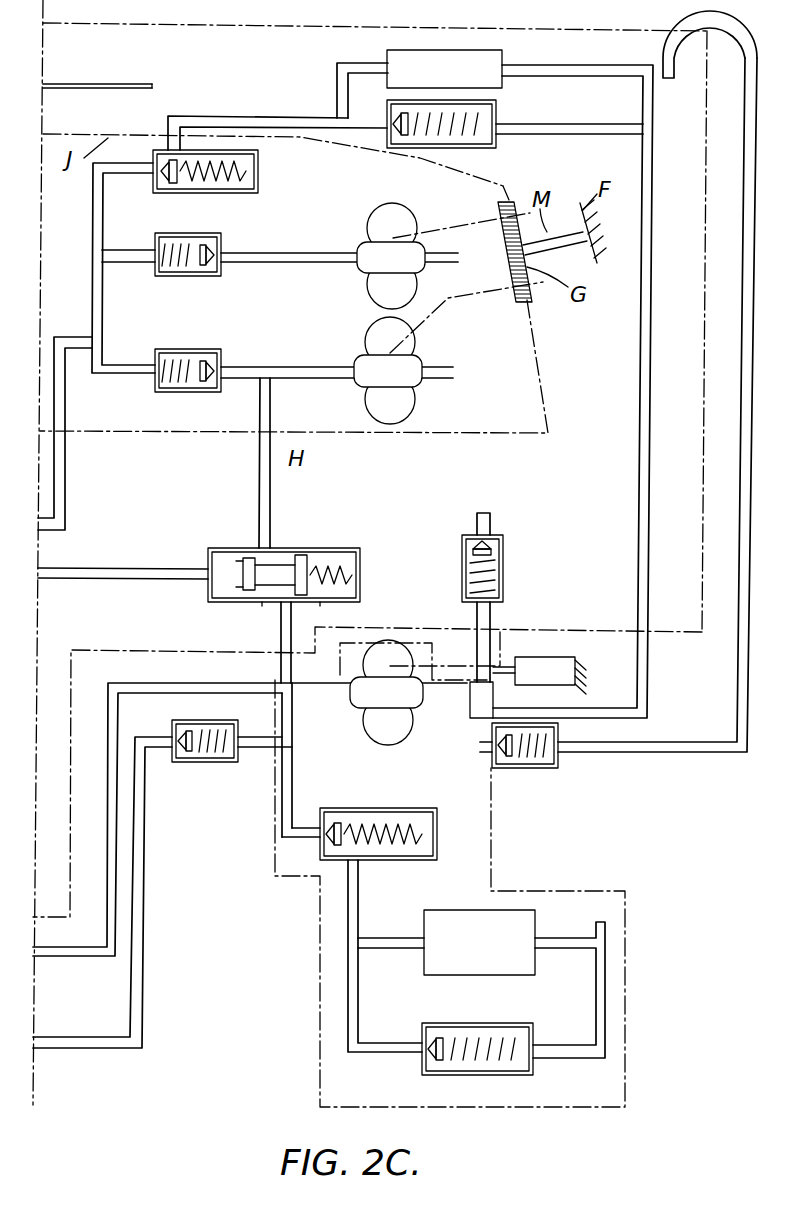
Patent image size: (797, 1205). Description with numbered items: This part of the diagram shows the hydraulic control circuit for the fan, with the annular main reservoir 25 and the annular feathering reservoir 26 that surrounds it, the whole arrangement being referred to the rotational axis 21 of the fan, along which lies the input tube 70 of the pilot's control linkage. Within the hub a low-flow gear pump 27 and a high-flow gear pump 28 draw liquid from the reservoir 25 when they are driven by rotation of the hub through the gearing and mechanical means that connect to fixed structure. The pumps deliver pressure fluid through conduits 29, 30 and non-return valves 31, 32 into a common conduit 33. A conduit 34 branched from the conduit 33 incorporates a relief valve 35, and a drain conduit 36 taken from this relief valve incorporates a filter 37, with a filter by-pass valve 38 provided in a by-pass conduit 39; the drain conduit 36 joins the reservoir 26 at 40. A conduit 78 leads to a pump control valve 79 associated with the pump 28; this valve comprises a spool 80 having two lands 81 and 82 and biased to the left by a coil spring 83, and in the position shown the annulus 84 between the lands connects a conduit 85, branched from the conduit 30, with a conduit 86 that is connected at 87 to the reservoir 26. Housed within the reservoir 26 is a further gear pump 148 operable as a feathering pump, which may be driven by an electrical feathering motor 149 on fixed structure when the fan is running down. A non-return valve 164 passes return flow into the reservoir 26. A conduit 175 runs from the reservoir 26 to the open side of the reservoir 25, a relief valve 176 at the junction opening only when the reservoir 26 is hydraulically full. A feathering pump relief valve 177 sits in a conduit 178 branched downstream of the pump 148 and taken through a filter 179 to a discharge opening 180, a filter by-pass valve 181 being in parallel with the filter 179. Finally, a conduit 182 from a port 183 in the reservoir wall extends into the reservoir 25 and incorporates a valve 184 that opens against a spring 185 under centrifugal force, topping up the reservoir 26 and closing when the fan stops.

The rotational axis 21 is at (150, 28).
The annular main reservoir 25 is at (643, 55).
The annular feathering reservoir 26 is at (322, 945).
The gear pump 27 is at (398, 221).
The gear pump 28 is at (363, 372).
The conduit 29 is at (292, 253).
The conduit 30 is at (243, 365).
The non-return valve 31 is at (212, 237).
The non-return valve 32 is at (187, 350).
The common conduit 33 is at (93, 298).
The conduit 34 is at (98, 220).
The relief valve 35 is at (258, 163).
The drain conduit 36 is at (241, 117).
The filter 37 is at (487, 66).
The filter by-pass valve 38 is at (496, 116).
The by-pass conduit 39 is at (568, 126).
The connection point 40 is at (493, 710).
The input tube 70 is at (60, 87).
The conduit 78 is at (92, 572).
The pump control valve 79 is at (305, 575).
The spool 80 is at (304, 577).
The land 81 is at (243, 560).
The land 82 is at (320, 602).
The coil spring 83 is at (352, 570).
The annulus 84 is at (265, 600).
The conduit 85 is at (271, 495).
The conduit 86 is at (285, 655).
The connection point 87 is at (280, 683).
The gear pump 148 is at (387, 705).
The electrical feathering motor 149 is at (565, 670).
The non-return valve 164 is at (195, 718).
The conduit 175 is at (698, 742).
The relief valve 176 is at (497, 766).
The feathering pump relief valve 177 is at (400, 823).
The conduit 178 is at (283, 743).
The filter 179 is at (433, 915).
The discharge opening 180 is at (602, 920).
The filter by-pass valve 181 is at (485, 1005).
The conduit 182 is at (488, 622).
The port 183 is at (483, 687).
The valve 184 is at (513, 596).
The spring 185 is at (497, 578).